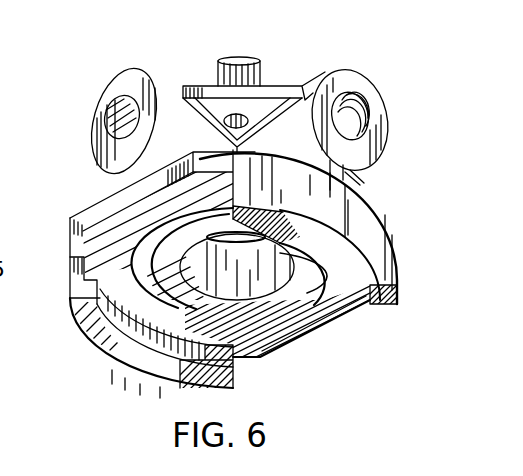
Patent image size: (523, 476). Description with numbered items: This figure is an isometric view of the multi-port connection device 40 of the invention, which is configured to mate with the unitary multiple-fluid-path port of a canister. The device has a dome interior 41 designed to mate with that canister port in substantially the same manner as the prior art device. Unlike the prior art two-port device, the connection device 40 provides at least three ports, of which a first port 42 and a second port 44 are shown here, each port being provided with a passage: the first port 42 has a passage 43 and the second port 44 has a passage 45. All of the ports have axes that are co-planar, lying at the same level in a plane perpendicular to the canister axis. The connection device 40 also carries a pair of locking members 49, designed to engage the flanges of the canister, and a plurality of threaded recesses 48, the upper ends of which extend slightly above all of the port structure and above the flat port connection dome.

The multi-port connection device 40 is at (86, 99).
The dome interior 41 is at (243, 283).
The first port 42 is at (90, 143).
The passage 43 is at (122, 97).
The second port 44 is at (358, 82).
The passage 45 is at (358, 127).
The threaded recesses 48 is at (237, 56).
The locking members 49 is at (127, 348).